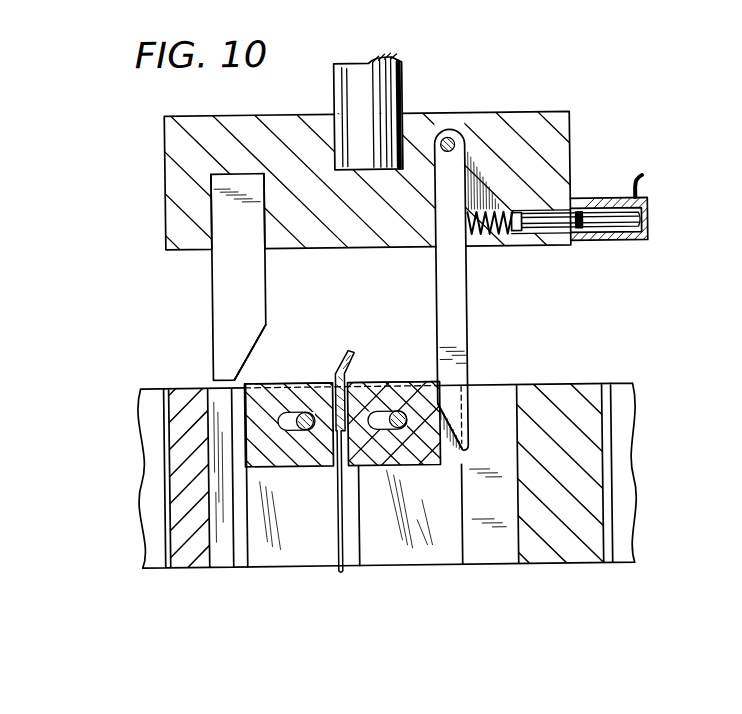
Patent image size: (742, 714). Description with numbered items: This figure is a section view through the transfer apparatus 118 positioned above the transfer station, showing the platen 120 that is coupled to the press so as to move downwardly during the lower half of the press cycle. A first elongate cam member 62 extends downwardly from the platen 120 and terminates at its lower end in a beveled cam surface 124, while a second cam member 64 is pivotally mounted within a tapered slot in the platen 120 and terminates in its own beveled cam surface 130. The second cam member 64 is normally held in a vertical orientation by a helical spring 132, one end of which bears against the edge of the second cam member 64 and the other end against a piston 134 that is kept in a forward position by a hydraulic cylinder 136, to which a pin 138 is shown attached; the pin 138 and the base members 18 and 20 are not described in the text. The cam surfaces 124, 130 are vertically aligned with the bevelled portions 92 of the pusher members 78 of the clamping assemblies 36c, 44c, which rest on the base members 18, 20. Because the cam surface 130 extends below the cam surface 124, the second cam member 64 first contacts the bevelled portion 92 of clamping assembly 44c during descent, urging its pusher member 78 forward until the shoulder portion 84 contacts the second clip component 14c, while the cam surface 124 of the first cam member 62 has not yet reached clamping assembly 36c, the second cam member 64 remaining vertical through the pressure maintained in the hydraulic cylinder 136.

The transfer apparatus 118 is at (452, 103).
The platen 120 is at (180, 132).
The first elongate cam member 62 is at (221, 313).
The beveled cam surface 124 is at (266, 340).
The second cam member 64 is at (455, 311).
The beveled cam surface 130 is at (452, 442).
The helical spring 132 is at (496, 234).
The piston 134 is at (522, 213).
The hydraulic cylinder 136 is at (611, 225).
The pin 138 is at (649, 189).
The base member 18 is at (183, 380).
The base member 20 is at (586, 357).
The shoulder portion 84 is at (358, 466).
The pusher member 78 is at (295, 452).
The clamping assembly 36c is at (308, 372).
The clamping assembly 44c is at (398, 356).
The second clip component 14c is at (363, 330).
The bevelled portion 92 is at (246, 381).